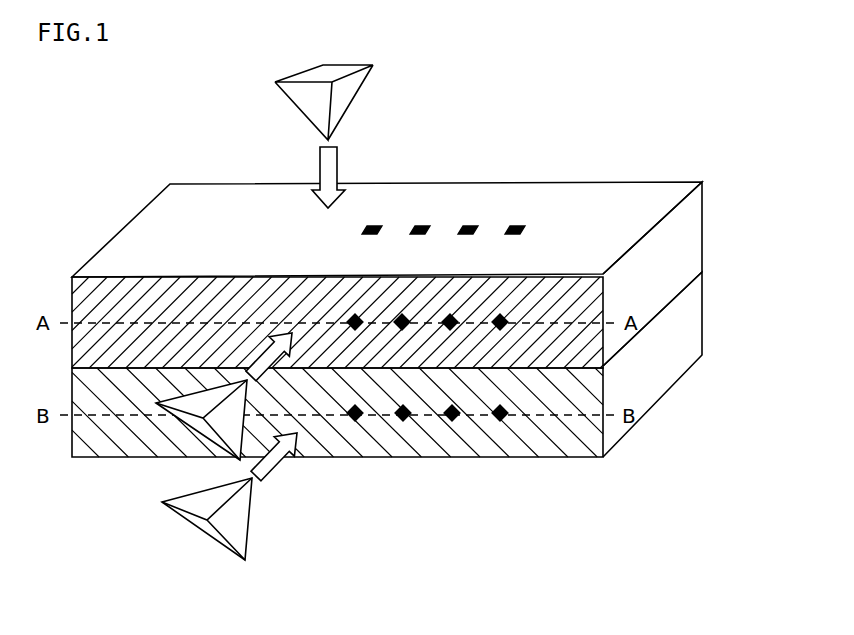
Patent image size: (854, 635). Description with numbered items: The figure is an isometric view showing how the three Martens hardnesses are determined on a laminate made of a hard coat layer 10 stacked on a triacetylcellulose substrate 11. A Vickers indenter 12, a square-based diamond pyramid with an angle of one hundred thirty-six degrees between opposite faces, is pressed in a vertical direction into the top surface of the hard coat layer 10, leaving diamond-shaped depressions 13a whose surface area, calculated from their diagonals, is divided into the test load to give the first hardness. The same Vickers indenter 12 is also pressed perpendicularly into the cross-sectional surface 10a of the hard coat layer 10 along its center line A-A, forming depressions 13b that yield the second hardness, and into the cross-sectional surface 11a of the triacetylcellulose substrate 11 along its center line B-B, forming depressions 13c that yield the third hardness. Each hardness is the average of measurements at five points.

The hard coat layer 10 is at (673, 242).
The cross-sectional surface of the hard coat layer 10a is at (587, 294).
The triacetylcellulose substrate 11 is at (652, 372).
The cross-sectional surface of the triacetylcellulose substrate 11a is at (590, 437).
The Vickers indenter 12 is at (338, 92).
The depressions on the hard coat layer surface 13a is at (380, 226).
The depressions on the hard coat layer cross-section 13b is at (358, 318).
The depressions on the triacetylcellulose substrate cross-section 13c is at (498, 420).